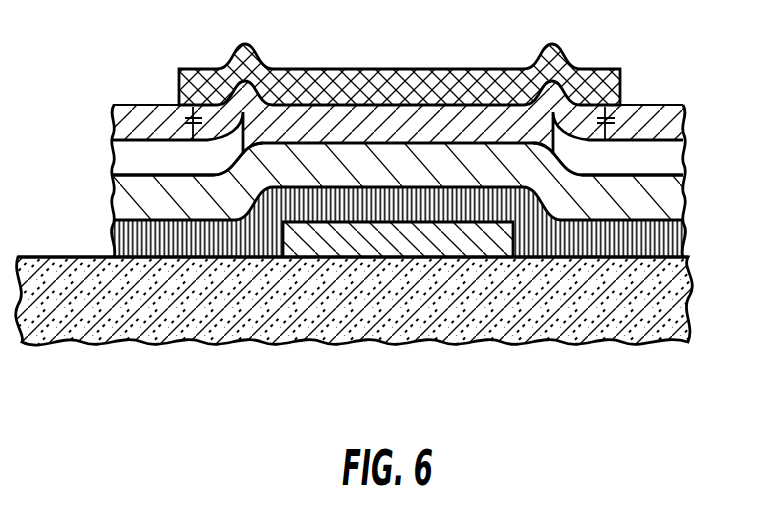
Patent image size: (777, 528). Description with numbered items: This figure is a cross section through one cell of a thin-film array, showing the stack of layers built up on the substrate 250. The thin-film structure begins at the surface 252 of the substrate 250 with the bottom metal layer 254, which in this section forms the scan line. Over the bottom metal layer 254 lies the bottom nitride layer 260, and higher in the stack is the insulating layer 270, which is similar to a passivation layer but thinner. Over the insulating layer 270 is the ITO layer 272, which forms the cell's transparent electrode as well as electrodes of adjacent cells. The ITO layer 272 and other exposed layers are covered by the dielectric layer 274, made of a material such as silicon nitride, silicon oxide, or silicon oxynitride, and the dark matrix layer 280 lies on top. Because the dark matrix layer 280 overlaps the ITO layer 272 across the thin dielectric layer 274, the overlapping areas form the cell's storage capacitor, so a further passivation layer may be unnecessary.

The substrate 250 is at (535, 328).
The surface 252 is at (80, 257).
The bottom metal layer 254 is at (394, 250).
The bottom nitride layer 260 is at (682, 241).
The insulating layer 270 is at (684, 200).
The ITO layer 272 is at (112, 159).
The dielectric layer 274 is at (684, 112).
The dark matrix layer 280 is at (622, 80).